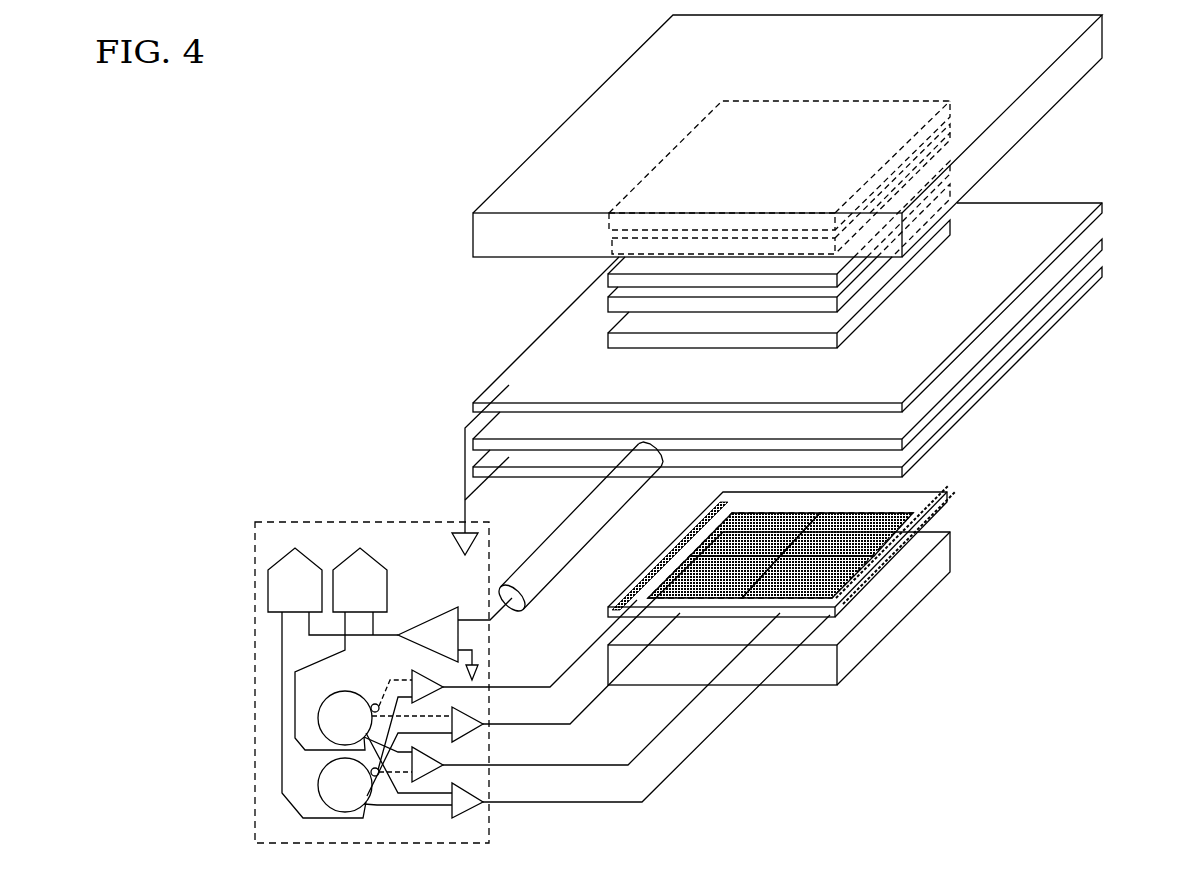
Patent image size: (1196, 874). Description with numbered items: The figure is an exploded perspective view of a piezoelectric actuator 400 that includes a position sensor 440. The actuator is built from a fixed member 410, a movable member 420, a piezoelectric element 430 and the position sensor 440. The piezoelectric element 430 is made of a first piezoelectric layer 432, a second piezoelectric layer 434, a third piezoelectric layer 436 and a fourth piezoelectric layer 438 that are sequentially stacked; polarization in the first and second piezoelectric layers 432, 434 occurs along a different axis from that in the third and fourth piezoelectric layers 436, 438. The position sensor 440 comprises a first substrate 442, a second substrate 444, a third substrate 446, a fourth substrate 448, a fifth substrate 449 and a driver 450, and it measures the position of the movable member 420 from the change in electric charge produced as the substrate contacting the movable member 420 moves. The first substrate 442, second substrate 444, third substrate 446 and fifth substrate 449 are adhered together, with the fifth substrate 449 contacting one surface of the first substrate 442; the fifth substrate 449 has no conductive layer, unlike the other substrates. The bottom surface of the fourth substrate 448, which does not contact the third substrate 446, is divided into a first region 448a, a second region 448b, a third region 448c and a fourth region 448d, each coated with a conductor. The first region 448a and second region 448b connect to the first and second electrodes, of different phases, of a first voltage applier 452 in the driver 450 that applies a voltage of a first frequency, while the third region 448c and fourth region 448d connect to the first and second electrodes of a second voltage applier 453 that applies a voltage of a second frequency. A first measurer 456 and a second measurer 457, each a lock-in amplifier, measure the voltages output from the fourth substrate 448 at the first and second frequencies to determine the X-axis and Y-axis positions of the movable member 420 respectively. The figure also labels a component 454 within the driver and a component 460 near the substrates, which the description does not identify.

The piezoelectric actuator 400 is at (474, 80).
The fixed member 410 is at (1018, 126).
The movable member 420 is at (868, 635).
The piezoelectric element 430 is at (410, 218).
The first piezoelectric layer 432 is at (611, 222).
The second piezoelectric layer 434 is at (612, 240).
The third piezoelectric layer 436 is at (612, 274).
The fourth piezoelectric layer 438 is at (612, 300).
The fifth substrate 449 is at (612, 337).
The position sensor 440 is at (955, 213).
The first substrate 442 is at (945, 366).
The second substrate 444 is at (958, 386).
The third substrate 446 is at (962, 412).
The fourth substrate 448 is at (950, 494).
The first region 448a is at (715, 535).
The second region 448b is at (688, 570).
The third region 448c is at (845, 532).
The fourth region 448d is at (828, 578).
The driver 450 is at (361, 521).
The first voltage applier 452 is at (322, 703).
The second voltage applier 453 is at (320, 784).
The current-to-voltage converter 454 is at (438, 613).
The first measurer 456 is at (376, 561).
The second measurer 457 is at (307, 557).
The optical fiber 460 is at (562, 538).